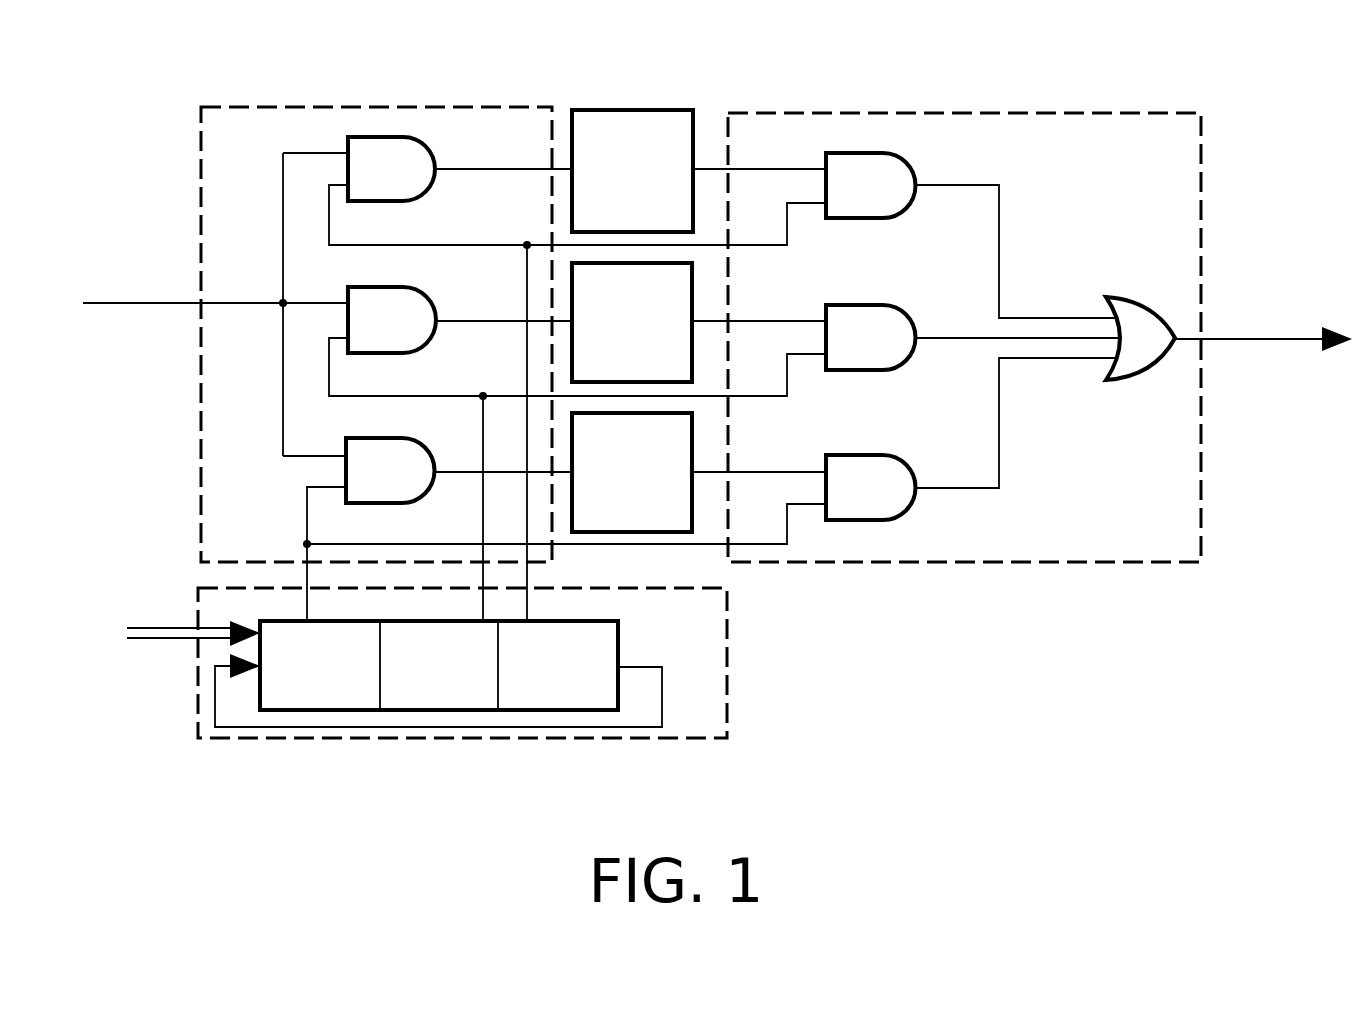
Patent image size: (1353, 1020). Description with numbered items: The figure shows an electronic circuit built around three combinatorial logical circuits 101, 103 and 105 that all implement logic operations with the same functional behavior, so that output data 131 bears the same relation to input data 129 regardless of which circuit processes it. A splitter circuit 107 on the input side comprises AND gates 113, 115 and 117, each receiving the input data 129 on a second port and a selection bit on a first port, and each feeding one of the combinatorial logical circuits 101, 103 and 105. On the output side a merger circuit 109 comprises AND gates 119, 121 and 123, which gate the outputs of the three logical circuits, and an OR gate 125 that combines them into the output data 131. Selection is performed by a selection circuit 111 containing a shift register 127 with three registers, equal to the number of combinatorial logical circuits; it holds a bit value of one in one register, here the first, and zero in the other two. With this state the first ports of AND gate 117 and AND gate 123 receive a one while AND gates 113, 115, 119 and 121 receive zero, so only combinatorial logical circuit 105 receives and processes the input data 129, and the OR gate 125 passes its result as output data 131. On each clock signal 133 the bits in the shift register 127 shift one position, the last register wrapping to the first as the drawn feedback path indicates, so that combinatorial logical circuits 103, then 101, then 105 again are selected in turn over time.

The combinatorial logical circuit 101 is at (632, 108).
The combinatorial logical circuit 103 is at (695, 292).
The combinatorial logical circuit 105 is at (695, 440).
The splitter circuit 107 is at (377, 105).
The merger circuit 109 is at (967, 112).
The selection circuit 111 is at (730, 667).
The AND gate 113 is at (428, 149).
The AND gate 115 is at (428, 299).
The AND gate 117 is at (345, 481).
The AND gate 119 is at (906, 163).
The AND gate 121 is at (906, 313).
The AND gate 123 is at (906, 463).
The OR gate 125 is at (1148, 303).
The shift register 127 is at (620, 645).
The input data 129 is at (123, 306).
The output data 131 is at (1268, 345).
The clock signal 133 is at (148, 645).